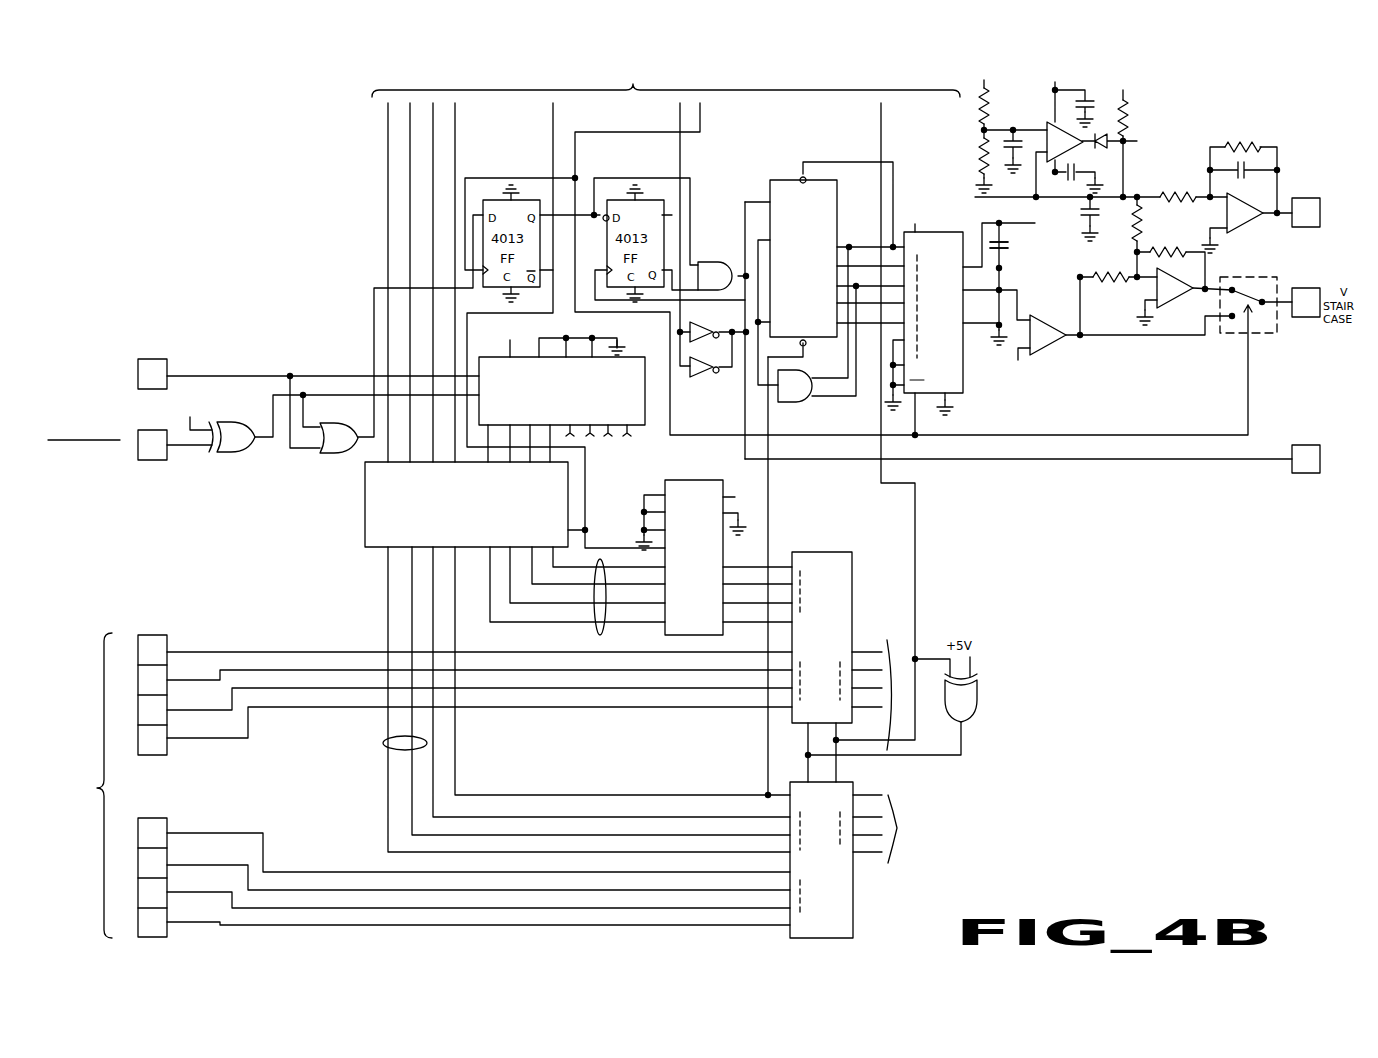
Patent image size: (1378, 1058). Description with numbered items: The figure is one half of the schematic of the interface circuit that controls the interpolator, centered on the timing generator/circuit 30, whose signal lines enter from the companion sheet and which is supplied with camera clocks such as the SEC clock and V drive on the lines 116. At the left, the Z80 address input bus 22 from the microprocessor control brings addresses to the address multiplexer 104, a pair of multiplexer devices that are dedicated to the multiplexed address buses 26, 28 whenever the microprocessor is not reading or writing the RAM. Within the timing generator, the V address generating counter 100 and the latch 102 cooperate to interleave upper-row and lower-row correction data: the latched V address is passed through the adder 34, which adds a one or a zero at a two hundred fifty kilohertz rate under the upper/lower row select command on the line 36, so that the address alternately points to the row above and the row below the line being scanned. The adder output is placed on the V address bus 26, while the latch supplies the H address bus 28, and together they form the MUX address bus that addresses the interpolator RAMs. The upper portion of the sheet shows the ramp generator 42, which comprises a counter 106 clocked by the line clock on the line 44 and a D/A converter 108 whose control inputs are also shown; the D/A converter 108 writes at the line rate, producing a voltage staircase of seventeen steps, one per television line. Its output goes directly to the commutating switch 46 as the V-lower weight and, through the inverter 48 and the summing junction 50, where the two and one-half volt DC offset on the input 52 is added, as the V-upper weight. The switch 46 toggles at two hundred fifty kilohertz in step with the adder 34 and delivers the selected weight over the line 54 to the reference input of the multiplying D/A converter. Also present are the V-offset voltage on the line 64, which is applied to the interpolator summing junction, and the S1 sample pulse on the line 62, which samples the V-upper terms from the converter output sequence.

The address input bus 22 is at (100, 713).
The V address bus 26 is at (601, 630).
The H address bus 28 is at (427, 743).
The timing generator/circuit 30 is at (427, 266).
The adder 34 is at (705, 481).
The upper/lower row select command line 36 is at (672, 440).
The ramp generator 42 is at (858, 208).
The line clock line 44 is at (770, 428).
The commutating switch 46 is at (1245, 276).
The inverter 48 is at (1184, 302).
The summing junction 50 is at (1134, 290).
The DC voltage input 52 is at (1134, 166).
The switch output line 54 is at (1280, 310).
The sample-1 (S1) pulse line 62 is at (1268, 460).
The V-offset voltage line 64 is at (1283, 207).
The V address generating counter 100 is at (635, 357).
The latch 102 is at (365, 506).
The address multiplexer 104 is at (790, 787).
The counter 106 is at (779, 178).
The D/A converter 108 is at (963, 388).
The SEC clock and V drive lines 116 is at (188, 447).